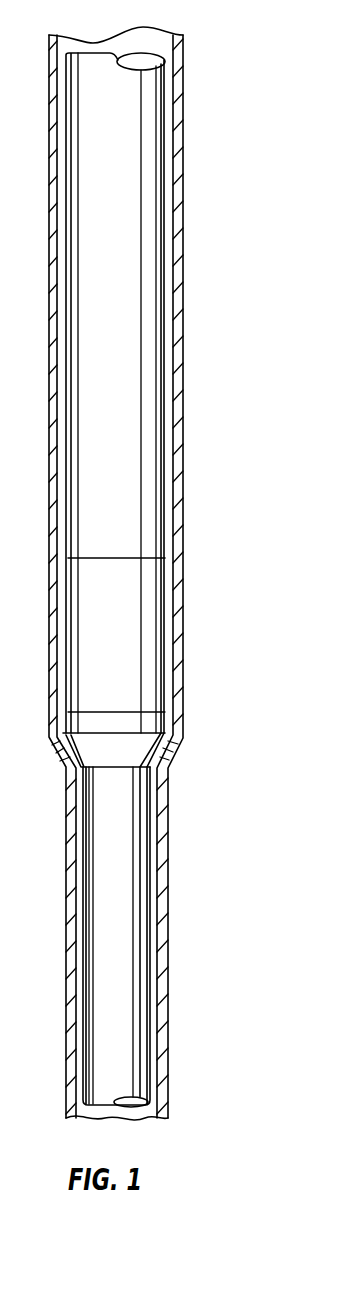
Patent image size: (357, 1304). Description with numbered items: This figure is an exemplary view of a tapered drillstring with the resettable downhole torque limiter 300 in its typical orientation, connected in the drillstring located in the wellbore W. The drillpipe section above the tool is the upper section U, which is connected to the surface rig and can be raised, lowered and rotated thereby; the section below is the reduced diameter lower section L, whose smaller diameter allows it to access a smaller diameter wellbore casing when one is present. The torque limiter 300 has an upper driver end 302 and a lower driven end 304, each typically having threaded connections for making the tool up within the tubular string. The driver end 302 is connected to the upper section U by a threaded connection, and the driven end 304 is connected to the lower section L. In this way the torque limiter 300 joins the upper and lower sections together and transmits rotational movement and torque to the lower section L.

The wellbore W is at (186, 227).
The upper section U is at (130, 263).
The lower section L is at (117, 1022).
The torque limiter 300 is at (147, 618).
The upper driver end 302 is at (165, 567).
The lower driven end 304 is at (165, 760).